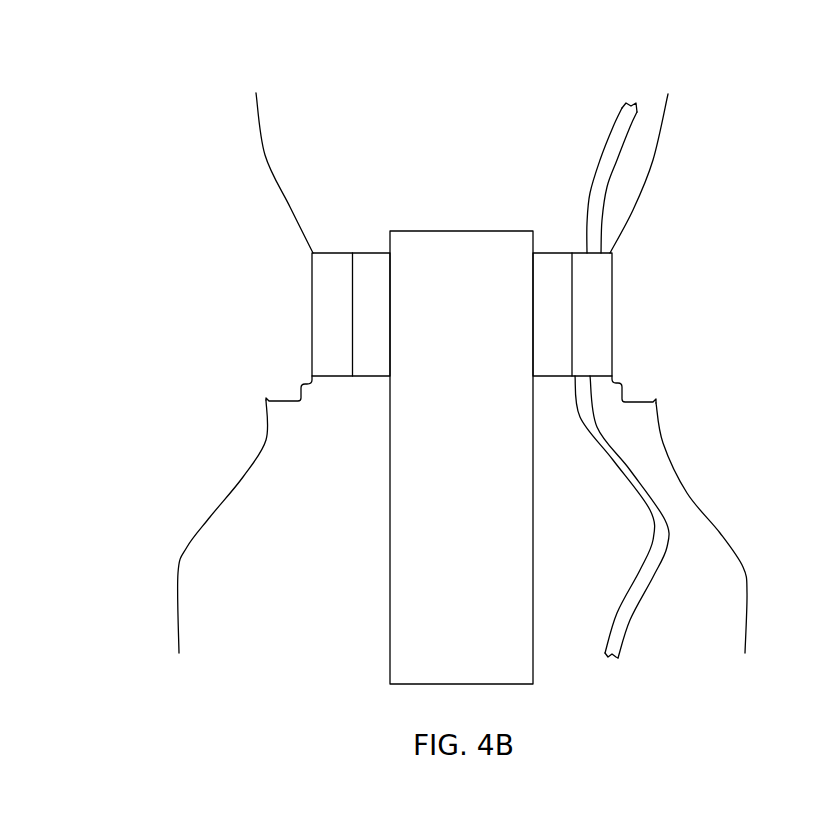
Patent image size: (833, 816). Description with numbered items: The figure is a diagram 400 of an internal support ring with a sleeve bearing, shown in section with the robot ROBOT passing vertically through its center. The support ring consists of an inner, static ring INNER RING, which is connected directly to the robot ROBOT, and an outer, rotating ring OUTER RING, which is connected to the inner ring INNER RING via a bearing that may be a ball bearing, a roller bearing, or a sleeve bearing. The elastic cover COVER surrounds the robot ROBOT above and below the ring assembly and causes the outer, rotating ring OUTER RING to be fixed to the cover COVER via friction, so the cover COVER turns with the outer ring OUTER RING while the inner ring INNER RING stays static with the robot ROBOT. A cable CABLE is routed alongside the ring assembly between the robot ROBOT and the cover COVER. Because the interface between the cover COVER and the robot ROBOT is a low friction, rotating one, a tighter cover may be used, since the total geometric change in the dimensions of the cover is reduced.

The diagram 400 is at (740, 61).
The cover COVER is at (265, 155).
The outer, rotating ring OUTER RING is at (328, 333).
The inner, static ring INNER RING is at (561, 308).
The robot ROBOT is at (391, 538).
The cable CABLE is at (622, 468).